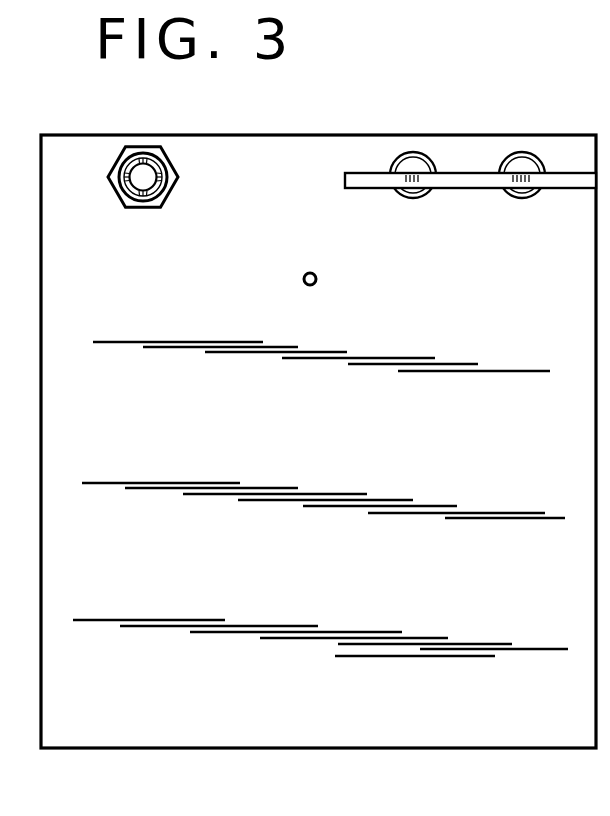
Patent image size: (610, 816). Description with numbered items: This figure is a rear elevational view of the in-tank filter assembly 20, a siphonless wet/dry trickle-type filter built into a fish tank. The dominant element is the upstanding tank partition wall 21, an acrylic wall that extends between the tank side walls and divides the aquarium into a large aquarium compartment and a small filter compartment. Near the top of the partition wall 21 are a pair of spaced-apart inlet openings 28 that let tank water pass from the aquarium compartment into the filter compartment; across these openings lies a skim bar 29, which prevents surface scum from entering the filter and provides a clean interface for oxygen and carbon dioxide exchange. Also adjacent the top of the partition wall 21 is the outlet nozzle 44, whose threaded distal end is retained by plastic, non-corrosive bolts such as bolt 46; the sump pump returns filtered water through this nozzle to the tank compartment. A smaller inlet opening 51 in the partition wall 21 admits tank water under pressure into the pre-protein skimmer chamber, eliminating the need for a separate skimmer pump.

The in-tank filter assembly 20 is at (481, 121).
The tank partition wall 21 is at (298, 442).
The inlet openings 28 is at (413, 196).
The skim bar 29 is at (470, 188).
The outlet nozzle 44 is at (119, 202).
The bolt 46 is at (153, 199).
The inlet opening 51 is at (315, 275).